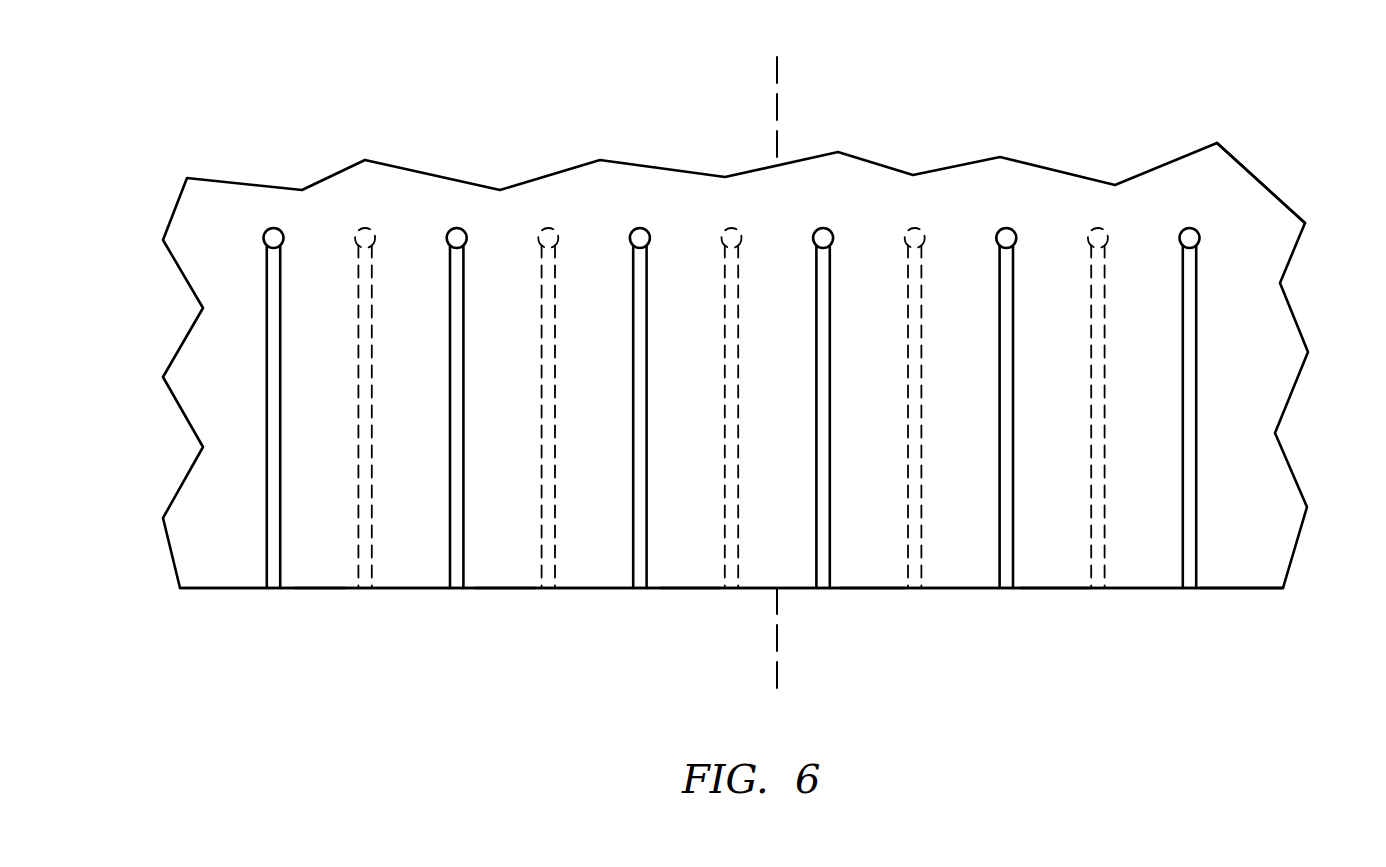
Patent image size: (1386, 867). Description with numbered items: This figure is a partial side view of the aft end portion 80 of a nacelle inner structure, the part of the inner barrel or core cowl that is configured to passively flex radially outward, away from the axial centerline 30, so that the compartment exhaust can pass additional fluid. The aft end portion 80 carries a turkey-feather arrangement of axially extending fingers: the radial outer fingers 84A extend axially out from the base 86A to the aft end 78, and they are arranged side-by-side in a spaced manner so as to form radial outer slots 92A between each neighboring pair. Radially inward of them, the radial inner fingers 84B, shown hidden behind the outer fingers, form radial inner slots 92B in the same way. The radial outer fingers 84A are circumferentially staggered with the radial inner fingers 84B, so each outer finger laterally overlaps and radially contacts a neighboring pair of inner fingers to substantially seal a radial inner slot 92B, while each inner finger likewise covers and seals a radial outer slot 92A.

The axial centerline 30 is at (777, 77).
The aft end 78 is at (222, 588).
The aft end portion 80 is at (1167, 129).
The radial outer fingers 84A is at (322, 588).
The radial inner fingers 84B is at (342, 588).
The base 86A is at (1250, 177).
The radial outer slots 92A is at (279, 390).
The radial inner slots 92B is at (365, 353).